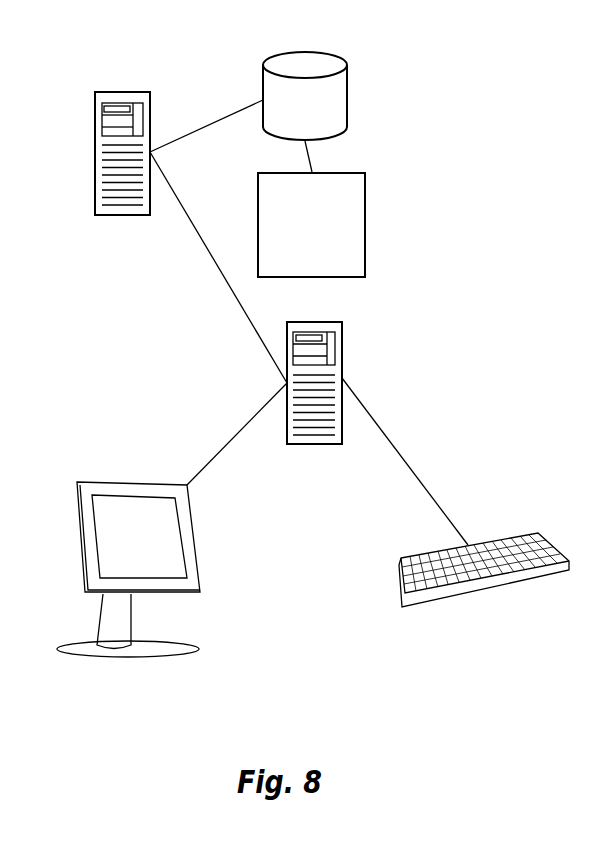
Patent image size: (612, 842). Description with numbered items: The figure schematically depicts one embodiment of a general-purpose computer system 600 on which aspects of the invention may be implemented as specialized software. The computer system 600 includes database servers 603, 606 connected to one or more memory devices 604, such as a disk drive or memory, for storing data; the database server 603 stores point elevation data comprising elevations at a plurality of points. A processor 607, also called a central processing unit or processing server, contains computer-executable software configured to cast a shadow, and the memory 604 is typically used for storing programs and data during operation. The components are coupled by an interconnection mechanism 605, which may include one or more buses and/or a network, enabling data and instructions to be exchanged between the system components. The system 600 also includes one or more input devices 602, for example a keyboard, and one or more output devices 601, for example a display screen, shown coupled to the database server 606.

The computer system 600 is at (418, 69).
The output device 601 is at (127, 481).
The input device 602 is at (487, 540).
The database server 603 is at (128, 91).
The memory device 604 is at (330, 52).
The interconnection mechanism 605 is at (207, 242).
The database server 606 is at (343, 378).
The processor 607 is at (366, 235).